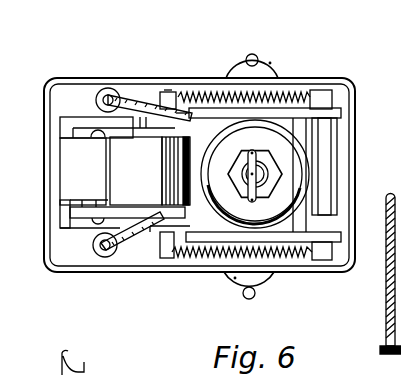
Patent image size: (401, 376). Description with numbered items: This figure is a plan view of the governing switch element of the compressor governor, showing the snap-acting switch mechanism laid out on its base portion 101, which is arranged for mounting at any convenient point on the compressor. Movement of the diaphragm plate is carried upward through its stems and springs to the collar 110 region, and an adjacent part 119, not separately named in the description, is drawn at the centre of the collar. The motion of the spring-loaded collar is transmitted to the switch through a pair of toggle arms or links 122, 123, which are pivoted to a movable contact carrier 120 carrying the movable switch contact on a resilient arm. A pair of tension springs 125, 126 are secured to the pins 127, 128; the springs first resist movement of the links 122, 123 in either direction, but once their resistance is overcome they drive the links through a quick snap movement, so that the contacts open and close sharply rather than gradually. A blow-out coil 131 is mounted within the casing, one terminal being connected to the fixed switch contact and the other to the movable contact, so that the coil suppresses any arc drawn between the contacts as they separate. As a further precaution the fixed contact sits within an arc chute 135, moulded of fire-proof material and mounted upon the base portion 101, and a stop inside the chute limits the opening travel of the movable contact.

The base portion 101 is at (132, 262).
The collar 110 is at (290, 162).
The hex nut 119 is at (265, 181).
The movable contact carrier 120 is at (302, 133).
The toggle arm 122 is at (312, 113).
The toggle arm 123 is at (217, 238).
The tension spring 125 is at (297, 94).
The tension spring 126 is at (300, 258).
The pin 127 is at (169, 92).
The pin 128 is at (164, 258).
The blow-out coil 131 is at (134, 190).
The arc chute 135 is at (79, 188).